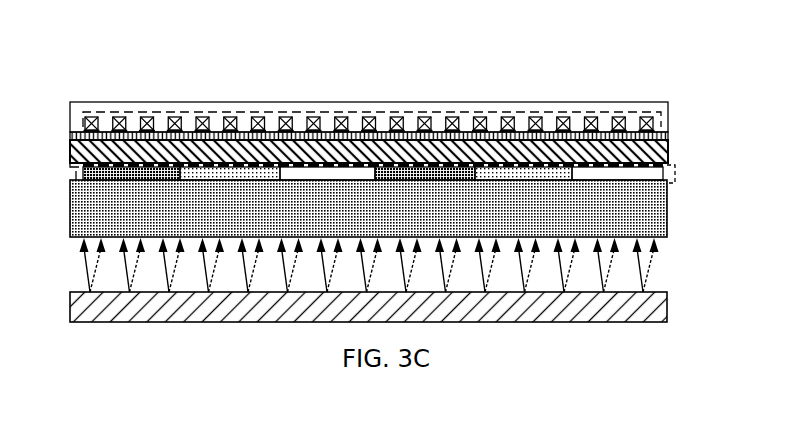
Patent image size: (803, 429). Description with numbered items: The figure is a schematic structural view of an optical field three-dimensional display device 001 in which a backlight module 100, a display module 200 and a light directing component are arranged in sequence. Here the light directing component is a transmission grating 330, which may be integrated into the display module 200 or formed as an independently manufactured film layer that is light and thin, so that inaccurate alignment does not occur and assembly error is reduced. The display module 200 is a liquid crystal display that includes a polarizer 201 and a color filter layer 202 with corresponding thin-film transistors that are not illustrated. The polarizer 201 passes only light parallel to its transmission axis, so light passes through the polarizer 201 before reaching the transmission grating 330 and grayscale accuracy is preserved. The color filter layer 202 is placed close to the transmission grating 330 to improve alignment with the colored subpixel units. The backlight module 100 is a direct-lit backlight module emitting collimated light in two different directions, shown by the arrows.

The display device 001 is at (386, 161).
The transmission grating 330 is at (660, 127).
The display module 200 is at (403, 144).
The polarizer 201 is at (405, 135).
The color filter layer 202 is at (325, 164).
The backlight module 100 is at (657, 308).